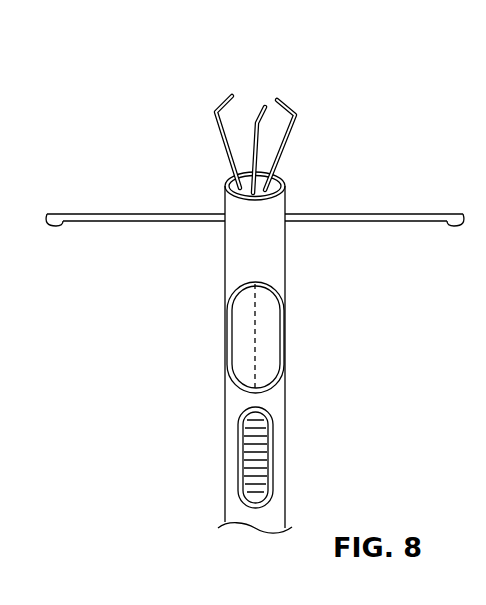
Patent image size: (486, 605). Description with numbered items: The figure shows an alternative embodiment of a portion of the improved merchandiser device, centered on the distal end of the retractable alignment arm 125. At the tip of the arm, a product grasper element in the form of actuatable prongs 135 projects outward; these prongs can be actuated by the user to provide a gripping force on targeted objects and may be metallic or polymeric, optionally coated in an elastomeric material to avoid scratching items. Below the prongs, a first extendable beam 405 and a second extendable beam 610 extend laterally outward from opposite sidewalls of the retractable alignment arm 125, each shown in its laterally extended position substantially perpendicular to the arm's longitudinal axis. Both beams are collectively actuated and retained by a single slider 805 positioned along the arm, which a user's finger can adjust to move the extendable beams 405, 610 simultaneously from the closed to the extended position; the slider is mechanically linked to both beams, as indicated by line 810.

The retractable alignment arm 125 is at (287, 253).
The actuatable prongs 135 is at (279, 96).
The extendable beam 405 is at (140, 212).
The second extendable beam 610 is at (402, 212).
The line 810 is at (257, 323).
The slider 805 is at (272, 438).